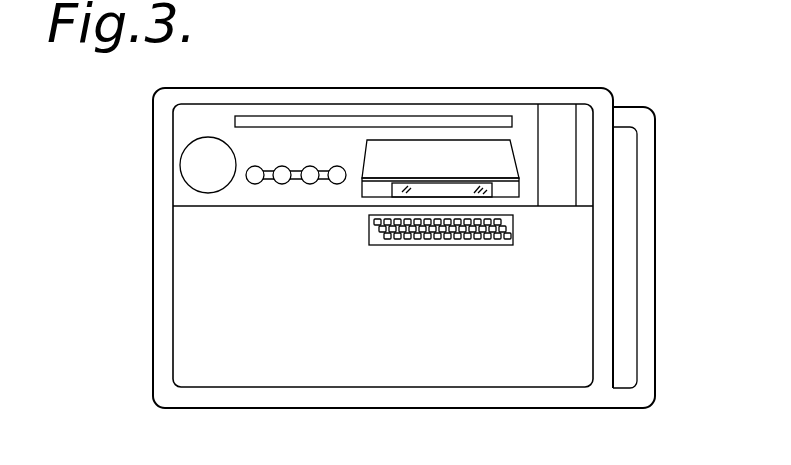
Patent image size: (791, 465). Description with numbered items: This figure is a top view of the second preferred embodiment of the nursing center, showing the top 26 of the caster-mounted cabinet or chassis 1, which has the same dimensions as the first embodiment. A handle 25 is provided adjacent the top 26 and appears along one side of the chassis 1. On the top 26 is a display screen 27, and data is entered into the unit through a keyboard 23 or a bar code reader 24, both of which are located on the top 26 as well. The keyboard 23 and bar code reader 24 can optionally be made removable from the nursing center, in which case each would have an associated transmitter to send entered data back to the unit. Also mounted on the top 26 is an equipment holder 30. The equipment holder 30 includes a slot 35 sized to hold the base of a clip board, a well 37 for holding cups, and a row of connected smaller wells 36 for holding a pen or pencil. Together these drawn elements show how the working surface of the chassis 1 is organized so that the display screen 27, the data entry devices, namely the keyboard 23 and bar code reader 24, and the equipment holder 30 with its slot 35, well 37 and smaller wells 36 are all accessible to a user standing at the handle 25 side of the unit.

The chassis 1 is at (136, 231).
The keyboard 23 is at (437, 245).
The bar code reader 24 is at (553, 137).
The handle 25 is at (648, 253).
The top 26 is at (375, 343).
The display screen 27 is at (435, 160).
The equipment holder 30 is at (252, 202).
The slot 35 is at (318, 118).
The smaller wells 36 is at (285, 184).
The well 37 is at (198, 162).